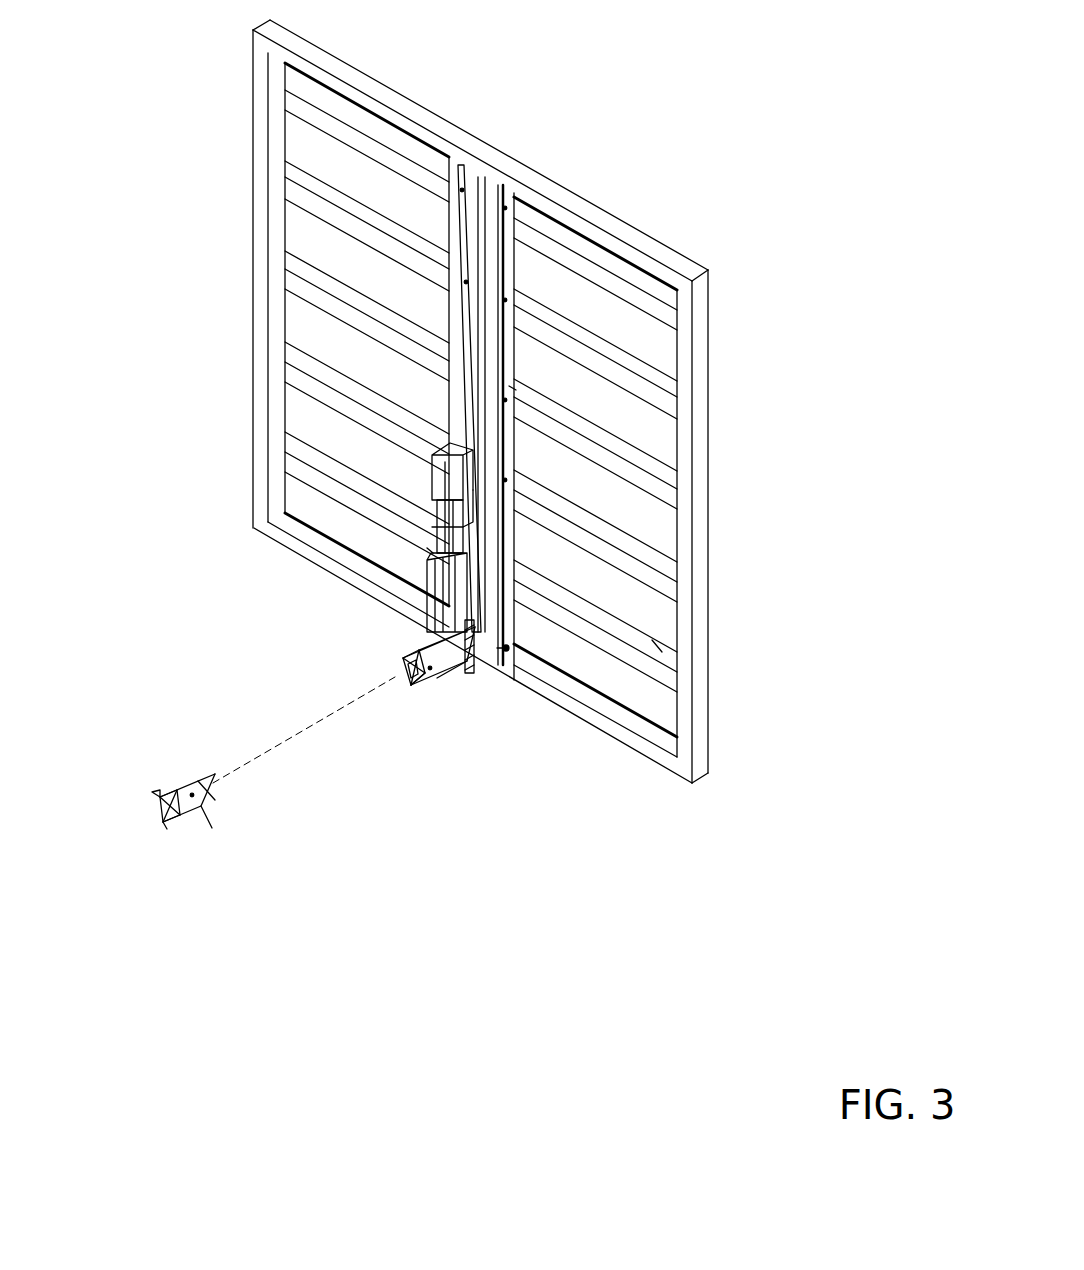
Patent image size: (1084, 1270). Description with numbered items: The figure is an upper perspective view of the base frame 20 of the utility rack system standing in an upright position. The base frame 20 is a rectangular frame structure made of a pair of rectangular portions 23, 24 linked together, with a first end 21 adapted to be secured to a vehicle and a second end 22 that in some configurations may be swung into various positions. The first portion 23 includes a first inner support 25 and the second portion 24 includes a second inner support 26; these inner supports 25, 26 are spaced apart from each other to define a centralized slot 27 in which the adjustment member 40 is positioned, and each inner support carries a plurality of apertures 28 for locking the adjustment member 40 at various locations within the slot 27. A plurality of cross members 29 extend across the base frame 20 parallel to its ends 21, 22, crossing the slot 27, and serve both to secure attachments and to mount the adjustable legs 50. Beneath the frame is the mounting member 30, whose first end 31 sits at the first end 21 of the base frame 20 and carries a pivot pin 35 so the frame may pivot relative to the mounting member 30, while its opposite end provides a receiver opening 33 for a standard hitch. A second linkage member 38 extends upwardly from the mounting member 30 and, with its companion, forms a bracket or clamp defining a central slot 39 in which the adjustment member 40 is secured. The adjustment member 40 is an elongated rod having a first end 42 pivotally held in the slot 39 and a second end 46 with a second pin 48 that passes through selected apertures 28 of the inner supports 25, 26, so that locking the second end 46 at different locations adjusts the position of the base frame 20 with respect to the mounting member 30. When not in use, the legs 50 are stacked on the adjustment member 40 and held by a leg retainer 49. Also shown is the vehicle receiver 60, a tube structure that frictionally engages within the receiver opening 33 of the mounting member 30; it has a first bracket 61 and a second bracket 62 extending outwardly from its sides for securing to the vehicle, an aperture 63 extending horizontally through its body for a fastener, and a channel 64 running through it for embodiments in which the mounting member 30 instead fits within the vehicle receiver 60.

The base frame 20 is at (718, 375).
The first end 21 is at (340, 583).
The second end 22 is at (405, 112).
The first portion 23 is at (258, 288).
The second portion 24 is at (688, 540).
The first inner support 25 is at (460, 170).
The second inner support 26 is at (526, 202).
The centralized slot 27 is at (484, 182).
The apertures 28 is at (500, 303).
The cross members 29 is at (292, 182).
The mounting member 30 is at (402, 668).
The first end 31 is at (437, 678).
The receiver opening 33 is at (408, 690).
The pivot pin 35 is at (500, 648).
The second linkage member 38 is at (470, 680).
The central slot 39 is at (403, 660).
The adjustment member 40 is at (458, 432).
The first end 42 is at (455, 355).
The second end 46 is at (658, 646).
The second pin 48 is at (516, 388).
The leg retainer 49 is at (427, 548).
The adjustable legs 50 is at (430, 595).
The vehicle receiver 60 is at (190, 783).
The first bracket 61 is at (158, 794).
The second bracket 62 is at (212, 830).
The aperture 63 is at (214, 804).
The channel 64 is at (163, 830).